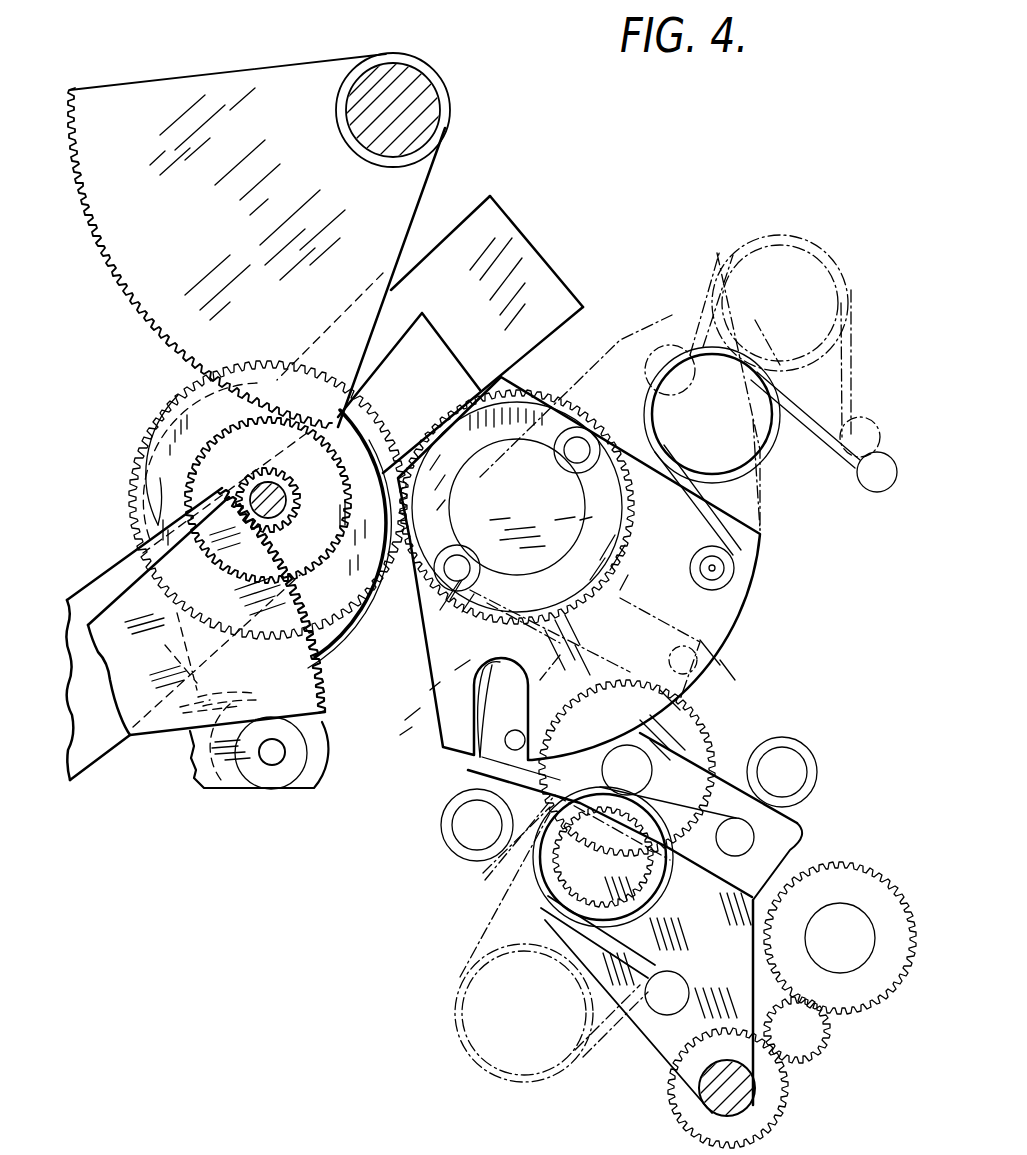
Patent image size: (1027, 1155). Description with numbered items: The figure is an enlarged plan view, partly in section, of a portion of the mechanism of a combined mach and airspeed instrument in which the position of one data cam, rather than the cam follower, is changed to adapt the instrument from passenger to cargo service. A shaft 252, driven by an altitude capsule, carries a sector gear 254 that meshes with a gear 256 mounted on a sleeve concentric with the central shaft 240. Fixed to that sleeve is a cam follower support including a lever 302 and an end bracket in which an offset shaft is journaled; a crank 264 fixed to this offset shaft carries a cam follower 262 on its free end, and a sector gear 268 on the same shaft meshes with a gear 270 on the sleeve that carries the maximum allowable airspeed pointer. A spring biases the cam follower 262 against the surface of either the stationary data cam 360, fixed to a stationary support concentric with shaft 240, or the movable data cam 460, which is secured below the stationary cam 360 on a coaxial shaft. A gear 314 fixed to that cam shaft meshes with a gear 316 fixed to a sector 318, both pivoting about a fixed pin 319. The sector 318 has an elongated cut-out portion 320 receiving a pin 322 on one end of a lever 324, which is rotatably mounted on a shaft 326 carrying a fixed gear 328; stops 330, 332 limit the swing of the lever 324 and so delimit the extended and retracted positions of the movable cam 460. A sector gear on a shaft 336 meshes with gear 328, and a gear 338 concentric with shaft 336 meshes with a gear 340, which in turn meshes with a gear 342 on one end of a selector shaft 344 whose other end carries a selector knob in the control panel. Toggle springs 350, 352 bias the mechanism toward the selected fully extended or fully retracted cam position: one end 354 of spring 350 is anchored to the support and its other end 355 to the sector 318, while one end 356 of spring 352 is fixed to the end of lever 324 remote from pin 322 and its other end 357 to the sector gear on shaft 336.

The shaft 240 is at (285, 492).
The shaft 252 is at (428, 90).
The sector gear 254 is at (427, 162).
The gear 256 is at (383, 427).
The cam follower 262 is at (300, 785).
The crank 264 is at (210, 790).
The sector gear 268 is at (171, 721).
The gear 270 is at (270, 470).
The lever 302 is at (526, 247).
The gear 314 is at (377, 588).
The gear 316 is at (372, 575).
The sector 318 is at (448, 660).
The fixed pin 319 is at (576, 530).
The elongated cut-out portion 320 is at (480, 683).
The pin 322 is at (482, 757).
The lever 324 is at (480, 778).
The shaft 326 is at (640, 757).
The gear 328 is at (725, 738).
The stop 330 is at (462, 822).
The stop 332 is at (797, 772).
The shaft 336 is at (712, 1106).
The gear 338 is at (772, 1090).
The gear 340 is at (810, 1046).
The gear 342 is at (878, 985).
The selector shaft 344 is at (845, 925).
The toggle spring 350 is at (772, 438).
The toggle spring 352 is at (655, 888).
The end of toggle spring 354 is at (877, 493).
The end of toggle spring 355 is at (736, 575).
The end of toggle spring 356 is at (785, 830).
The end of toggle spring 357 is at (682, 990).
The stationary data cam 360 is at (338, 598).
The movable data cam 460 is at (322, 640).